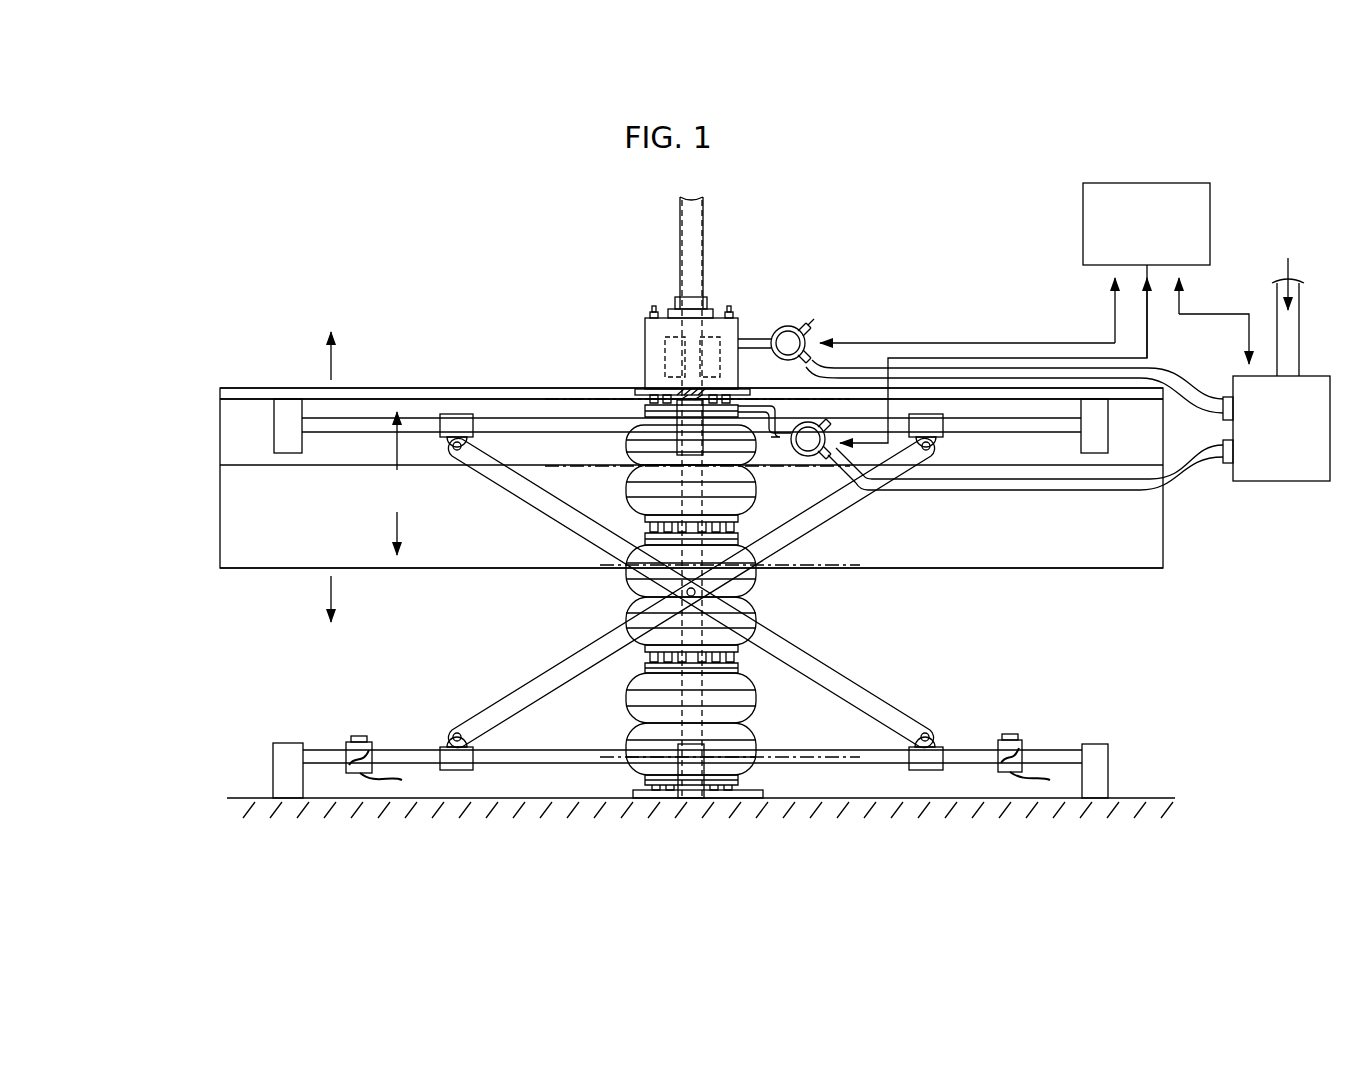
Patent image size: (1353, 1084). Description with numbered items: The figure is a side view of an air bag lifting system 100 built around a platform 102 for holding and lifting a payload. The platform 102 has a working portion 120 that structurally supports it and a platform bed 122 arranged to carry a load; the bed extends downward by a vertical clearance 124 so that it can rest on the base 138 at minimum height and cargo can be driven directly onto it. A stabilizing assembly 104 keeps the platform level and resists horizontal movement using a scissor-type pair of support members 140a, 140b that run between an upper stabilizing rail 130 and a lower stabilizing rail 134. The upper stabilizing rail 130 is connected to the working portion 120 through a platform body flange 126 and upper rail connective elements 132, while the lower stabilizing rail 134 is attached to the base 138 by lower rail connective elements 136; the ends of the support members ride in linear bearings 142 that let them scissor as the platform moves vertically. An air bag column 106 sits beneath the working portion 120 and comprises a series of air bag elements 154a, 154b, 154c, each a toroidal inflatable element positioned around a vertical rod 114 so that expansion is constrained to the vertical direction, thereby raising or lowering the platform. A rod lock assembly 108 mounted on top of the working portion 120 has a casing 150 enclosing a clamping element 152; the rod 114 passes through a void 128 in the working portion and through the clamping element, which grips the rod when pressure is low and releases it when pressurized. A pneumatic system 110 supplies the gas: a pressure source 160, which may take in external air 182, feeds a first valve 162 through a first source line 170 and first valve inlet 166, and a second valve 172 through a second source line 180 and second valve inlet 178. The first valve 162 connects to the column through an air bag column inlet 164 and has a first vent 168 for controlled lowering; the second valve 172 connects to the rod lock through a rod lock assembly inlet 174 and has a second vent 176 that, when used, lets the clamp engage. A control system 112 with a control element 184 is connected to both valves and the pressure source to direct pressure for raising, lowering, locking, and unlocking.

The air bag lifting system 100 is at (292, 306).
The platform 102 is at (207, 518).
The stabilizing assembly 104 is at (357, 438).
The air bag column 106 is at (766, 598).
The rod lock assembly 108 is at (632, 323).
The pneumatic system 110 is at (1264, 508).
The control system 112 is at (1064, 212).
The vertical rod 114 is at (680, 222).
The working portion 120 is at (221, 390).
The platform bed 122 is at (290, 568).
The vertical clearance 124 is at (393, 483).
The platform body flange 126 is at (221, 434).
The void 128 is at (684, 392).
The upper stabilizing rail 130 is at (345, 418).
The upper rail connective elements 132 is at (287, 410).
The lower stabilizing rail 134 is at (346, 757).
The lower rail connective elements 136 is at (273, 755).
The base 138 is at (1173, 800).
The support member 140a is at (860, 676).
The support member 140b is at (520, 672).
The linear bearings 142 is at (455, 414).
The casing 150 is at (670, 310).
The clamping element 152 is at (664, 355).
The air bag element 154a is at (626, 690).
The air bag element 154b is at (626, 585).
The air bag element 154c is at (630, 466).
The pressure source 160 is at (1254, 397).
The first valve 162 is at (822, 458).
The air bag column inlet 164 is at (770, 440).
The first valve inlet 166 is at (862, 486).
The first vent 168 is at (798, 410).
The first source line 170 is at (945, 490).
The second valve 172 is at (797, 327).
The rod lock assembly inlet 174 is at (745, 338).
The second vent 176 is at (814, 326).
The second valve inlet 178 is at (830, 348).
The second source line 180 is at (1003, 368).
The external air 182 is at (1276, 302).
The control element 184 is at (1146, 270).